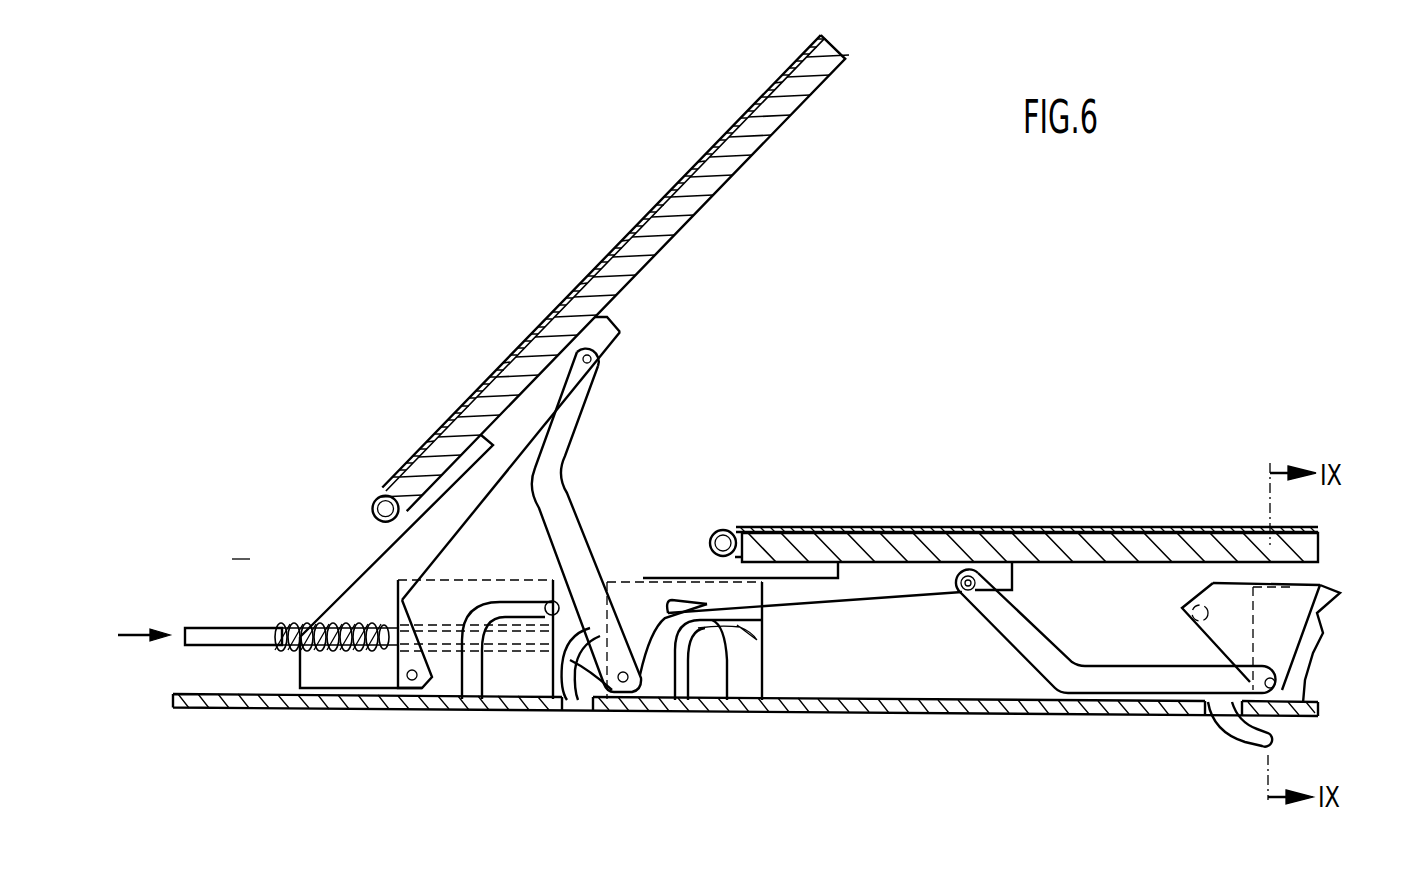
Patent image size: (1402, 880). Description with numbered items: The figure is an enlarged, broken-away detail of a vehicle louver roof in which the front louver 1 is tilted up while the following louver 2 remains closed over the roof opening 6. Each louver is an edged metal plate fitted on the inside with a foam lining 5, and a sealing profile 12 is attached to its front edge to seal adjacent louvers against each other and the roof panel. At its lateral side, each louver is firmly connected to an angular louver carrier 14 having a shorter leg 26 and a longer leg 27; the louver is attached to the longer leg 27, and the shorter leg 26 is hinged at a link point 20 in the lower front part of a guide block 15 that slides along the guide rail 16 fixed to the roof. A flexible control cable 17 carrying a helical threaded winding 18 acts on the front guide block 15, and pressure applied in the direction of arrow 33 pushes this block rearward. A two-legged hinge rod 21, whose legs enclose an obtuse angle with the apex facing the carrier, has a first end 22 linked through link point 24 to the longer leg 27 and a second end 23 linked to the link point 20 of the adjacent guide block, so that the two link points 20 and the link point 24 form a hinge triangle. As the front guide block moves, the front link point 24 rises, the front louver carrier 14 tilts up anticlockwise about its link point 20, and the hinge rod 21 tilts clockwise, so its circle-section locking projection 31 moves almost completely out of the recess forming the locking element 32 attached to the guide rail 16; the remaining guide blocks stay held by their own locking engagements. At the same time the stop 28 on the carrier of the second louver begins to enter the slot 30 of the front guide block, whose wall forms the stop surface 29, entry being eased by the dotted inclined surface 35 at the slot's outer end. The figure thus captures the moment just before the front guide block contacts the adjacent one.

The louver 1 is at (718, 143).
The louver 2 is at (1036, 530).
The foam lining 5 is at (770, 126).
The roof opening 6 is at (241, 544).
The sealing profile 12 is at (378, 500).
The louver carrier 14 is at (366, 578).
The guide block 15 is at (472, 580).
The guide rail 16 is at (916, 708).
The control cable 17 is at (240, 641).
The helical threaded winding 18 is at (300, 624).
The link point 20 is at (412, 682).
The hinge rod 21 is at (578, 528).
The first end 22 is at (598, 388).
The second end 23 is at (643, 600).
The link point 24 is at (593, 357).
The shorter leg 26 is at (346, 664).
The longer leg 27 is at (520, 427).
The stop 28 is at (547, 604).
The stop surface 29 is at (677, 665).
The slot 30 is at (500, 660).
The locking projection 31 is at (597, 705).
The locking element 32 is at (586, 708).
The arrow 33 is at (122, 630).
The inclined surface 35 is at (720, 600).